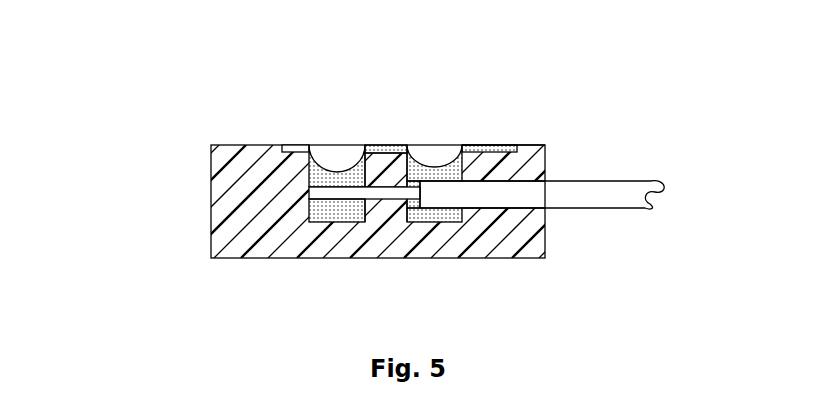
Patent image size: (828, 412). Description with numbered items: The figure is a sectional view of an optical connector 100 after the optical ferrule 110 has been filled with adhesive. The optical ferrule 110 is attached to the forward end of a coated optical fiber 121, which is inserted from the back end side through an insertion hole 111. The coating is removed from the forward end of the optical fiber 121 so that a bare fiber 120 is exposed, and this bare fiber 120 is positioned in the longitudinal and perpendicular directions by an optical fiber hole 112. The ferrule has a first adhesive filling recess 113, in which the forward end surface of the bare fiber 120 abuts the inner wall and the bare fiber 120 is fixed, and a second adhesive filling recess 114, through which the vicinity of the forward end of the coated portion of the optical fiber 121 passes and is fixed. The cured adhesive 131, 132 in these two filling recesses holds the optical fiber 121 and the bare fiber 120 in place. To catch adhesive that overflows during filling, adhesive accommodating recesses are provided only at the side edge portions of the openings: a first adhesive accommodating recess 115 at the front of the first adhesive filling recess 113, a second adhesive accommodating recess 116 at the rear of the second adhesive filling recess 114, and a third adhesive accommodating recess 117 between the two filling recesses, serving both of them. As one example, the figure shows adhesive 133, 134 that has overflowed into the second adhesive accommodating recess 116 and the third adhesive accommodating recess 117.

The optical connector 100 is at (592, 131).
The optical ferrule 110 is at (206, 135).
The insertion hole 111 is at (523, 185).
The optical fiber hole 112 is at (376, 190).
The first adhesive filling recess 113 is at (325, 205).
The second adhesive filling recess 114 is at (437, 212).
The first adhesive accommodating recess 115 is at (291, 148).
The second adhesive accommodating recess 116 is at (490, 151).
The third adhesive accommodating recess 117 is at (391, 152).
The bare fiber 120 is at (388, 199).
The optical fiber 121 is at (587, 195).
The adhesive 131 is at (349, 172).
The adhesive 132 is at (438, 160).
The adhesive 133 is at (503, 150).
The adhesive 134 is at (397, 150).